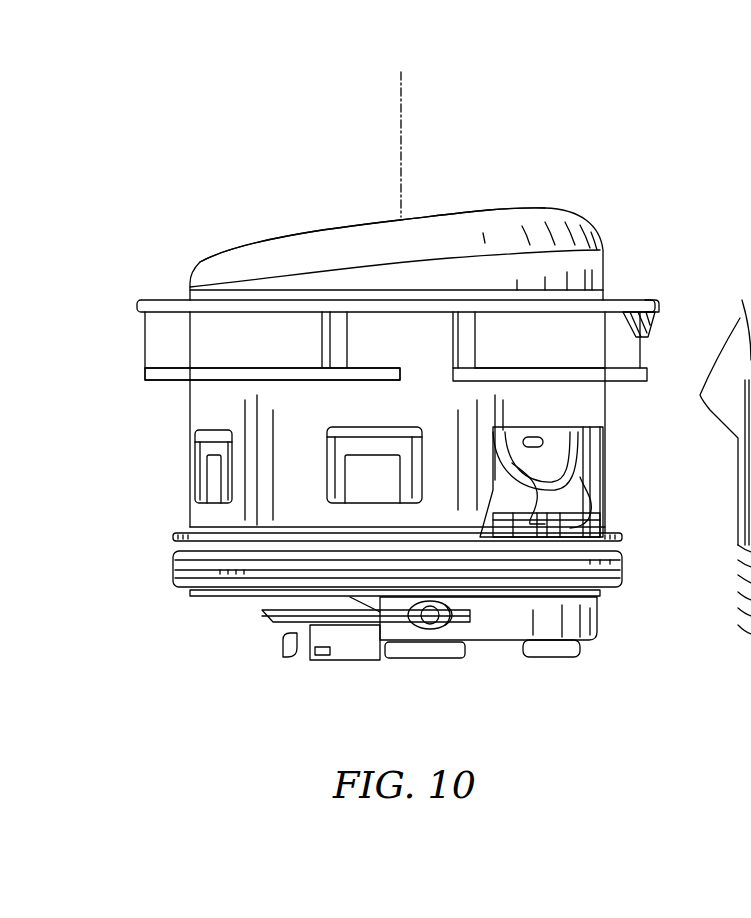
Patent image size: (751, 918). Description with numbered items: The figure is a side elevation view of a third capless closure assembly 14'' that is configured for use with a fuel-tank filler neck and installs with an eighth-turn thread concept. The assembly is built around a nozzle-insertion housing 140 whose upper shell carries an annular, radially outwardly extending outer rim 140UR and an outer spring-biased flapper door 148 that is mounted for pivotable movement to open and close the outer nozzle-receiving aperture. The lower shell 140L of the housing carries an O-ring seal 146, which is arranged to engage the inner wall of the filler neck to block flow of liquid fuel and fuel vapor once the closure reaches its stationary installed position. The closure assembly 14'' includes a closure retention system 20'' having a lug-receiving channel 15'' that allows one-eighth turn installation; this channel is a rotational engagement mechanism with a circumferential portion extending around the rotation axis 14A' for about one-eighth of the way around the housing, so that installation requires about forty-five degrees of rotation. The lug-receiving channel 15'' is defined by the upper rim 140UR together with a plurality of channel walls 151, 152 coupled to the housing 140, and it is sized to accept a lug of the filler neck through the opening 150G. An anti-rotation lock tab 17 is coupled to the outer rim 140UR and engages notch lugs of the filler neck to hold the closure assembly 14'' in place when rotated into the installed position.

The third capless closure assembly 14'' is at (399, 387).
The rotation axis 14A' is at (445, 144).
The nozzle-insertion housing 140 is at (505, 207).
The outer spring-biased flapper door 148 is at (352, 228).
The outer rim 140UR is at (620, 300).
The lower shell 140L is at (610, 630).
The channel wall 151 is at (317, 338).
The channel wall 152 is at (323, 385).
The opening 150G is at (427, 373).
The O-ring seal 146 is at (223, 590).
The closure retention system 20'' is at (587, 406).
The anti-rotation lock tab 17 is at (662, 298).
The lug-receiving channel 15'' is at (587, 451).